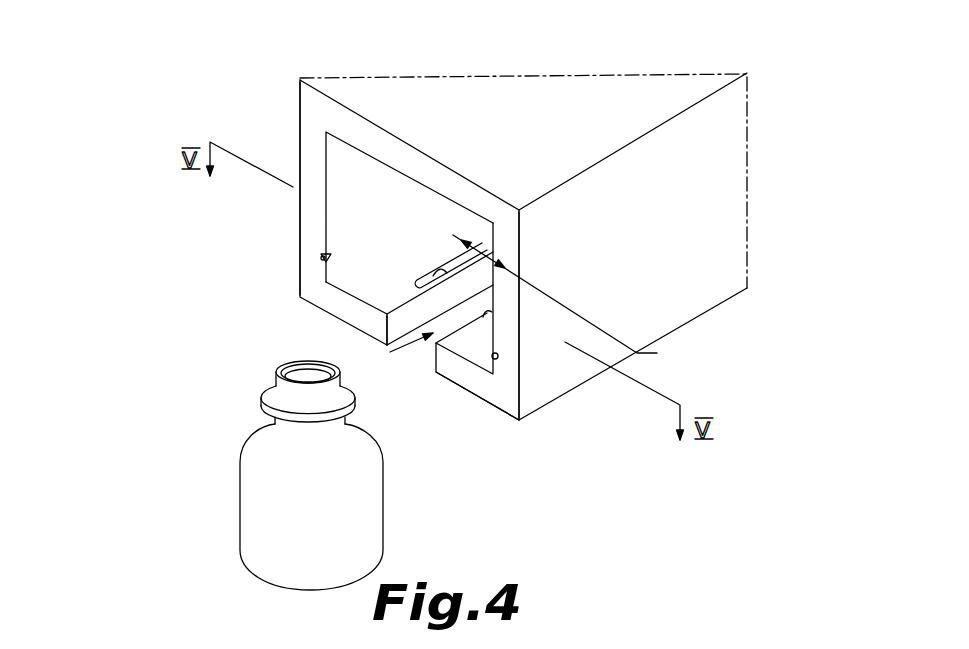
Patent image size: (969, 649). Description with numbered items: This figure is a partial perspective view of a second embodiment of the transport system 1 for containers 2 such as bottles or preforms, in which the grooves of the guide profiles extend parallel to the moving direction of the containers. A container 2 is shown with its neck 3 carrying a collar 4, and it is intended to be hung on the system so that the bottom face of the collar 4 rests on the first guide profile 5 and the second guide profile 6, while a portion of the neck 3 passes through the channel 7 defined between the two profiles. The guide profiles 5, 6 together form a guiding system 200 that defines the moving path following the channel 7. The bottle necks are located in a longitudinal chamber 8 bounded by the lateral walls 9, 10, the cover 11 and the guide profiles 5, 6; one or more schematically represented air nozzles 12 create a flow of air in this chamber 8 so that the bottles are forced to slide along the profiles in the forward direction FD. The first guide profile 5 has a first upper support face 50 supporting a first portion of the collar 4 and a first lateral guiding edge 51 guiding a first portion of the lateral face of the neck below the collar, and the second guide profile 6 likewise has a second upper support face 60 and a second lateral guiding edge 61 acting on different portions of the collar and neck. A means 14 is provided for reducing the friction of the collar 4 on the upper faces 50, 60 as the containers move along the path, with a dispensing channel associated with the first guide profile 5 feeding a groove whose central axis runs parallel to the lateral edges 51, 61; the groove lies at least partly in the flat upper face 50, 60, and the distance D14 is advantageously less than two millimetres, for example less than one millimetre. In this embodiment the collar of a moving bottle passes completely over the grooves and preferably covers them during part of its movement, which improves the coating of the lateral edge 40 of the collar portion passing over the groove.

The transport system 1 is at (222, 76).
The container 2 is at (271, 477).
The neck 3 is at (275, 502).
The collar 4 is at (268, 383).
The first guide profile 5 is at (333, 298).
The second guide profile 6 is at (473, 383).
The channel 7 is at (418, 352).
The longitudinal chamber 8 is at (343, 162).
The lateral wall 9 is at (313, 153).
The lateral wall 10 is at (510, 243).
The cover 11 is at (482, 202).
The air nozzle 12 is at (323, 258).
The friction reducing means 14 is at (438, 270).
The lateral edge of the collar 40 is at (263, 400).
The first upper support face 50 is at (365, 275).
The first lateral guiding edge 51 is at (401, 327).
The second upper support face 60 is at (518, 425).
The second lateral guiding edge 61 is at (452, 334).
The guiding system 200 is at (520, 473).
The distance D14 is at (579, 301).
The forward direction FD is at (398, 355).